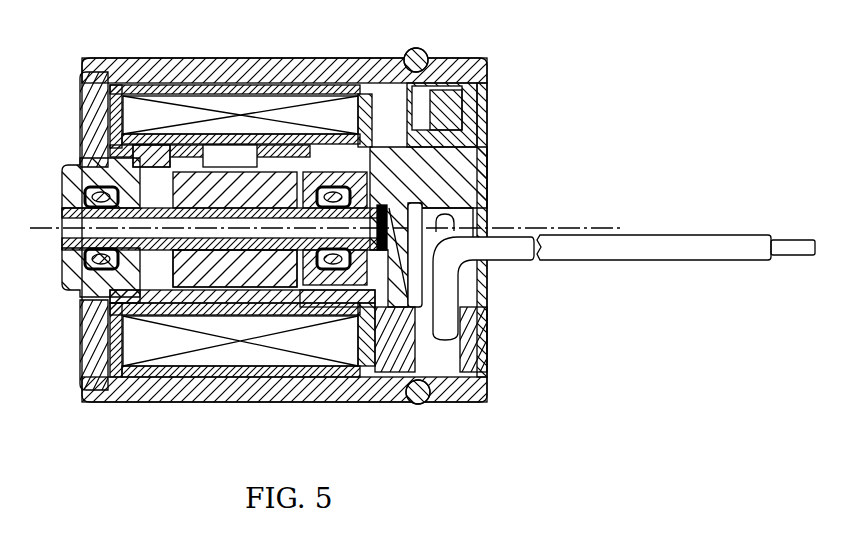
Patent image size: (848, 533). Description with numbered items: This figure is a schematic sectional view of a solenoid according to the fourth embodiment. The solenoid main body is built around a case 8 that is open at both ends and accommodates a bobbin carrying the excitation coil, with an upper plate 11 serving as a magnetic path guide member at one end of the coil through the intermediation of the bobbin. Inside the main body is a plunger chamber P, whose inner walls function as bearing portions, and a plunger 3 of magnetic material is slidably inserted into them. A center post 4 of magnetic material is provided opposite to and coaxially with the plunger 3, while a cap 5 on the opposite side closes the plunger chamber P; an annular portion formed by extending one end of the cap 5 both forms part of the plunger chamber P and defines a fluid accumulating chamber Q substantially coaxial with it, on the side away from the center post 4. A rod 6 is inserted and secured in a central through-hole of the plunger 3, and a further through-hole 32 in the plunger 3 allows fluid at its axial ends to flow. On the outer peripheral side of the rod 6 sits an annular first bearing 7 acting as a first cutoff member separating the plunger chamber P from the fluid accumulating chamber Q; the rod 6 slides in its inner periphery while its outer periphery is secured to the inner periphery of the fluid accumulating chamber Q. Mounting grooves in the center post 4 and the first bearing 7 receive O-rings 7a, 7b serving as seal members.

The plunger 3 is at (260, 178).
The center post 4 is at (63, 170).
The cap 5 is at (478, 183).
The rod 6 is at (60, 217).
The first bearing 7 is at (338, 172).
The O-ring 7a is at (349, 335).
The O-ring 7b is at (132, 303).
The case 8 is at (170, 63).
The upper plate 11 is at (80, 87).
The through-hole 32 is at (249, 268).
The plunger chamber P is at (308, 292).
The fluid accumulating chamber Q is at (486, 290).